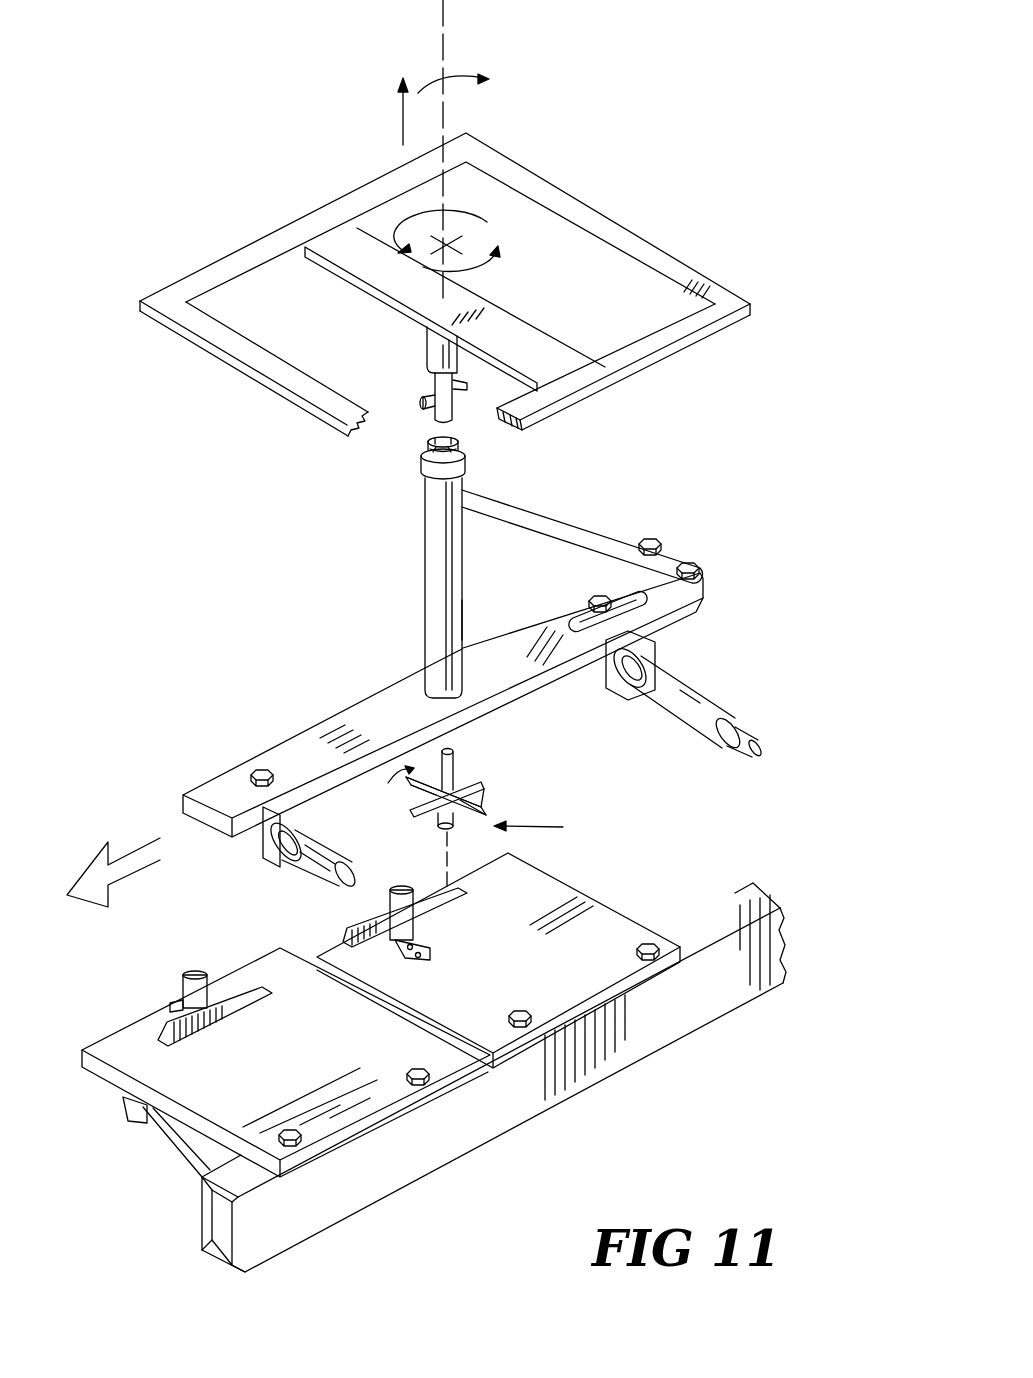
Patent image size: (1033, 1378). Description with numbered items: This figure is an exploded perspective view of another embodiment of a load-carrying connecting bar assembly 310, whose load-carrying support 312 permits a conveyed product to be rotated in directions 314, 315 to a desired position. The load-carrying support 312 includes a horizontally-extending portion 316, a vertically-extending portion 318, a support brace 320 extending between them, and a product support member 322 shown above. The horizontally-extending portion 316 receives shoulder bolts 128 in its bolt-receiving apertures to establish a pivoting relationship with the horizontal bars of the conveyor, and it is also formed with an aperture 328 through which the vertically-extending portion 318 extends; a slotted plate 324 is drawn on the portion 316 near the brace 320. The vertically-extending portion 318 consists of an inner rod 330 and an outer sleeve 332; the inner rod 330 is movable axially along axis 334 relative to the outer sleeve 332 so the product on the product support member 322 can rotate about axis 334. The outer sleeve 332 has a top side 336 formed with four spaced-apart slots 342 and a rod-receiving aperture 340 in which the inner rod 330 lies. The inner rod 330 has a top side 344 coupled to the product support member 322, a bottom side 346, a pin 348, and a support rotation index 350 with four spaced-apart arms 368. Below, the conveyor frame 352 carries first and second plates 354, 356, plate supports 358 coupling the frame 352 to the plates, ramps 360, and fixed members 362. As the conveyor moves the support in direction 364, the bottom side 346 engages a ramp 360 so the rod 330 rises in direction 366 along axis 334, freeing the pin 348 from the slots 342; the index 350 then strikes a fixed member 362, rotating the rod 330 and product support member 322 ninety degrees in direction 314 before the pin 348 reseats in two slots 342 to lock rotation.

The load-carrying connecting bar assembly 310 is at (152, 645).
The load-carrying support 312 is at (733, 590).
The rotation direction 314 is at (432, 218).
The rotation direction 315 is at (452, 86).
The horizontally-extending portion 316 is at (357, 712).
The vertically-extending portion 318 is at (413, 594).
The support brace 320 is at (580, 532).
The product support member 322 is at (683, 266).
The slotted plate 324 is at (560, 602).
The aperture 328 is at (462, 700).
The inner rod 330 is at (433, 381).
The outer sleeve 332 is at (464, 603).
The axis 334 is at (445, 38).
The top side 336 is at (420, 475).
The rod-receiving aperture 340 is at (442, 437).
The slots 342 is at (457, 445).
The top side 344 is at (476, 370).
The bottom side 346 is at (440, 830).
The pin 348 is at (425, 402).
The support rotation index 350 is at (554, 827).
The conveyor frame 352 is at (393, 1163).
The first plate 354 is at (593, 912).
The second plate 356 is at (153, 1070).
The plate supports 358 is at (170, 1148).
The ramps 360 is at (383, 953).
The fixed members 362 is at (197, 975).
The conveying direction 364 is at (135, 848).
The upward direction 366 is at (398, 122).
The arms 368 is at (412, 818).
The shoulder bolts 128 is at (602, 592).